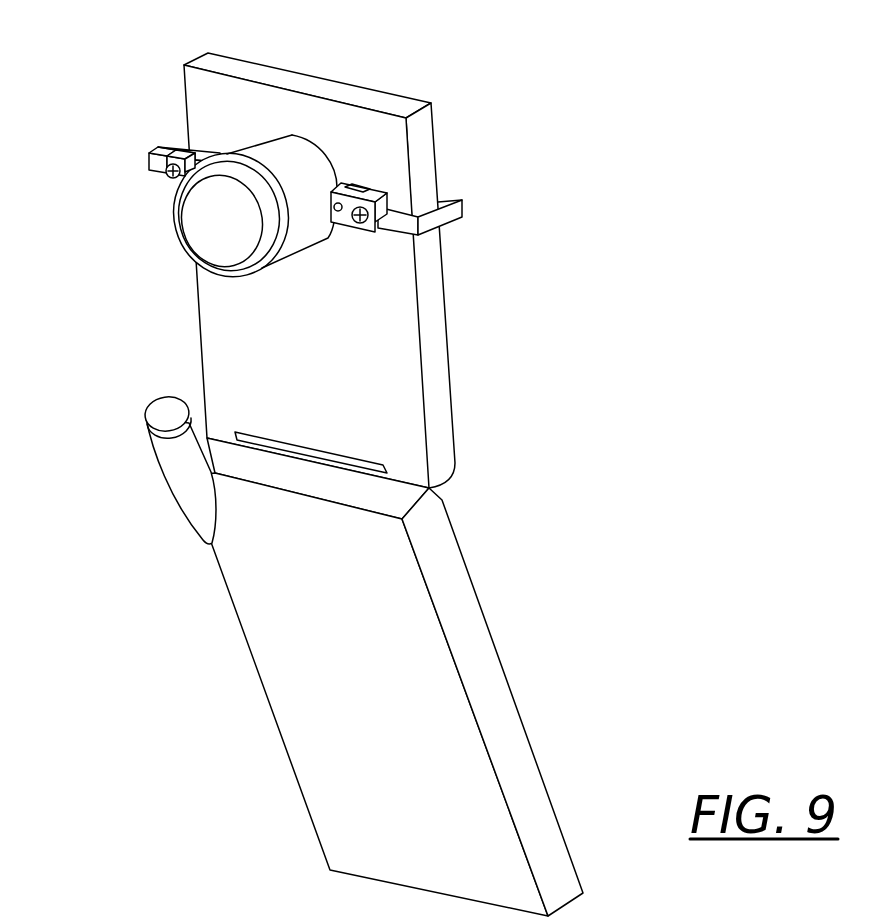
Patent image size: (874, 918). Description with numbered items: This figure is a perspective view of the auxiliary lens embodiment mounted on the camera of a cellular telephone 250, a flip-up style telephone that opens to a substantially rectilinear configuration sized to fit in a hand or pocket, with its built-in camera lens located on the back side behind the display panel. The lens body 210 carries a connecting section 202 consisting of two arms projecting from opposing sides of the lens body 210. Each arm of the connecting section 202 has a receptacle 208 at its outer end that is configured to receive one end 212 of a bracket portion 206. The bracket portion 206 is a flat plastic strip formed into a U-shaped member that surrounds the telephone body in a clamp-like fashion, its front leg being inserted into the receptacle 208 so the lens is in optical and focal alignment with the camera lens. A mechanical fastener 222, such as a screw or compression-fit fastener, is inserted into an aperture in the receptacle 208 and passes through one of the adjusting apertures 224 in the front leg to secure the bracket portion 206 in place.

The lens body 210 is at (270, 140).
The connecting section 202 is at (334, 186).
The end of bracket portion 212 is at (334, 212).
The receptacle 208 is at (185, 152).
The bracket portion 206 is at (148, 165).
The mechanical fastener 222 is at (160, 175).
The adjusting aperture 224 is at (345, 196).
The cellular telephone 250 is at (465, 600).